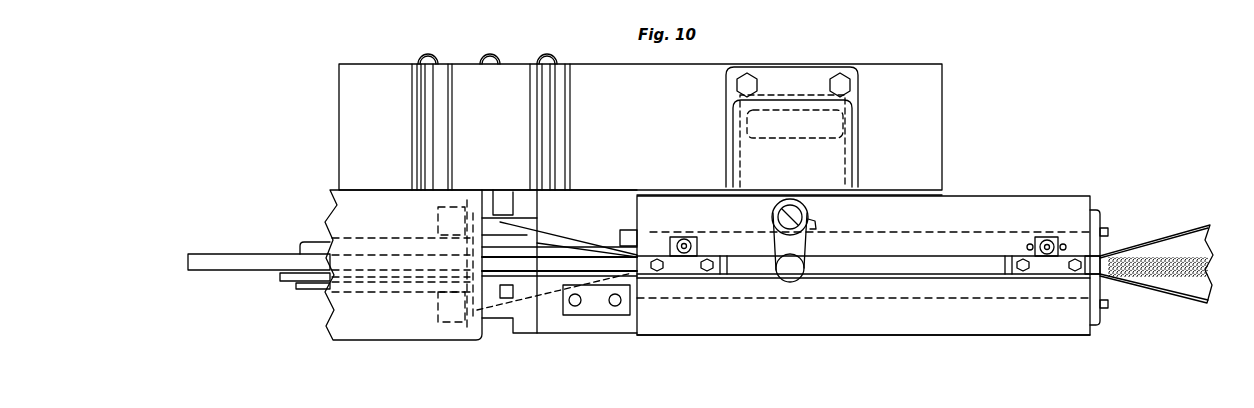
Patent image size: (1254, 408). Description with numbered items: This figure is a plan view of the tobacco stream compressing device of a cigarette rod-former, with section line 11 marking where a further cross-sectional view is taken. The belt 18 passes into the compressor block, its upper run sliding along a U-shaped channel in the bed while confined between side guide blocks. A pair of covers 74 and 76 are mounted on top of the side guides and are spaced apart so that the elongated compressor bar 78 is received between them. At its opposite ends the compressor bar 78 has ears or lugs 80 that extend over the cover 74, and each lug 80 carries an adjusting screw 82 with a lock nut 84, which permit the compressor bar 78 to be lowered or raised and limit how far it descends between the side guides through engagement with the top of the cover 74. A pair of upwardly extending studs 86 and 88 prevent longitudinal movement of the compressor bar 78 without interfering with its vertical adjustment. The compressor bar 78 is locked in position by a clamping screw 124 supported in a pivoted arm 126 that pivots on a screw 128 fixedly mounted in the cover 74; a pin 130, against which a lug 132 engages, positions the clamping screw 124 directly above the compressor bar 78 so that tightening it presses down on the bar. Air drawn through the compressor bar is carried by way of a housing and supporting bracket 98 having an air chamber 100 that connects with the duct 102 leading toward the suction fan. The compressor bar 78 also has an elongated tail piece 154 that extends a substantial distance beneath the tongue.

The section line 11— 11 is at (182, 270).
The belt 18 is at (1177, 295).
The cover 74 is at (956, 210).
The cover 76 is at (975, 320).
The compressor bar 78 is at (937, 266).
The lug 80 is at (678, 268).
The adjusting screw 82 is at (686, 238).
The lock nut 84 is at (676, 246).
The stud 86 is at (1066, 243).
The stud 88 is at (1028, 244).
The housing and supporting bracket 98 is at (846, 178).
The air chamber 100 is at (850, 147).
The duct 102 is at (845, 130).
The clamping screw 124 is at (790, 283).
The pivoted arm 126 is at (770, 237).
The screw 128 is at (806, 210).
The pin 130 is at (812, 238).
The lug 132 is at (826, 214).
The tail piece 154 is at (237, 258).